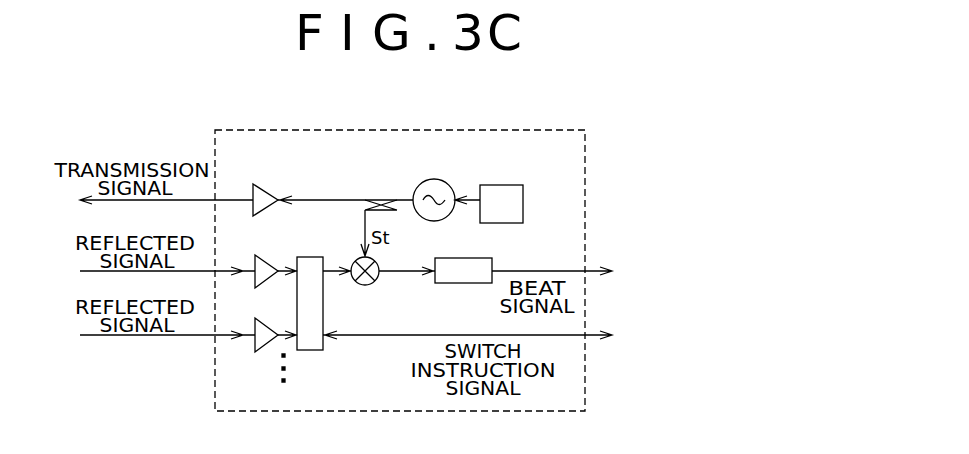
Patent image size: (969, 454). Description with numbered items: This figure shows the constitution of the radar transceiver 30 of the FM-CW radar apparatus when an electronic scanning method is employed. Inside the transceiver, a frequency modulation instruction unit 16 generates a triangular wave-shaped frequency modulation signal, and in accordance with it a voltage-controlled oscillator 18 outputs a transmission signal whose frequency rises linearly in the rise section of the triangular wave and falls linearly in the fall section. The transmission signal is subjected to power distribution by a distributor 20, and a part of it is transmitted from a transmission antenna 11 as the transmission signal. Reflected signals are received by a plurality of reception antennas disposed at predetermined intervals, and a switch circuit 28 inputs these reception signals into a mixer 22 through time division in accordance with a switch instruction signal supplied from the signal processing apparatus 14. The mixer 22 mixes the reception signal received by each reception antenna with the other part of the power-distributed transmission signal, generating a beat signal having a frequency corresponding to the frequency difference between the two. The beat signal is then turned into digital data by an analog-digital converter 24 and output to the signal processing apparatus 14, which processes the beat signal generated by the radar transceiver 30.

The radar transceiver 30 is at (215, 130).
The transmission antenna 11 is at (268, 190).
The signal processing apparatus 14 is at (701, 296).
The frequency modulation instruction unit 16 is at (492, 185).
The voltage-controlled oscillator 18 is at (437, 221).
The distributor 20 is at (370, 198).
The mixer 22 is at (378, 282).
The analog-digital converter 24 is at (447, 284).
The switch circuit 28 is at (310, 351).